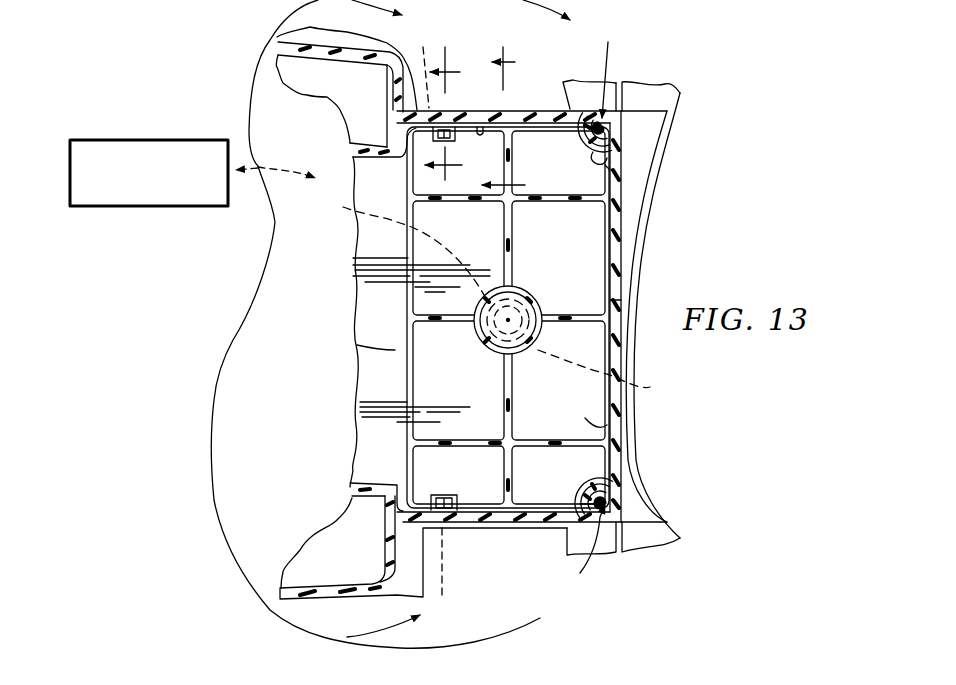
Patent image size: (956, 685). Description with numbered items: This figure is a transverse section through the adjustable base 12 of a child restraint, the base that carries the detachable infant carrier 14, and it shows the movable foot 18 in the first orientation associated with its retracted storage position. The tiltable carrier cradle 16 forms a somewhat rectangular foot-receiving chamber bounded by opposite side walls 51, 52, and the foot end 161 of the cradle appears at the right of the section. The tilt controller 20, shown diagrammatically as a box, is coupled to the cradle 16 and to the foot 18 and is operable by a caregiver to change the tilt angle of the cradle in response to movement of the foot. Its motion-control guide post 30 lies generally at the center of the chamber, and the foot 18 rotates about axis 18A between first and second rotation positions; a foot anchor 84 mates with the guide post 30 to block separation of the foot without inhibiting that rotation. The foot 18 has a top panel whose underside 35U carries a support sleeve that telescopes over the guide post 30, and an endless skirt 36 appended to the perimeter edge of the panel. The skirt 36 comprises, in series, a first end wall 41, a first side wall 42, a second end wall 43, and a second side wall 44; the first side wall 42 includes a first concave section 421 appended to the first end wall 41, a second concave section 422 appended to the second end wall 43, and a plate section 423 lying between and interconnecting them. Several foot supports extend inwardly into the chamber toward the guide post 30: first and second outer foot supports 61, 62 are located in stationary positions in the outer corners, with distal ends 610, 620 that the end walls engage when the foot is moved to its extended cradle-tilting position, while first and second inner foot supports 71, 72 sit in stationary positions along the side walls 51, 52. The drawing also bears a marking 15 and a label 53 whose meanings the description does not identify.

The adjustable base 12 is at (338, 364).
The detachable infant carrier 14 is at (458, 113).
The section line 15 is at (515, 120).
The tiltable carrier cradle 16 is at (637, 100).
The movable foot 18 is at (395, 246).
The axis 18A is at (508, 320).
The tilt controller 20 is at (180, 207).
The motion-control guide post 30 is at (455, 282).
The underside of top panel 35U is at (607, 425).
The skirt 36 is at (396, 383).
The first end wall 41 is at (483, 524).
The first side wall 42 is at (597, 402).
The second end wall 43 is at (481, 127).
The second side wall 44 is at (403, 352).
The side wall 51 is at (543, 524).
The side wall 52 is at (540, 107).
The right wall 53 is at (617, 313).
The first outer foot support 61 is at (540, 618).
The second outer foot support 62 is at (593, 68).
The first inner foot support 71 is at (423, 560).
The second inner foot support 72 is at (420, 64).
The foot anchor 84 is at (484, 350).
The foot end 161 is at (665, 170).
The first concave section 421 is at (592, 488).
The second concave section 422 is at (610, 172).
The plate section 423 is at (612, 267).
The distal end of first outer foot support 610 is at (597, 493).
The distal end of second outer foot support 620 is at (610, 136).